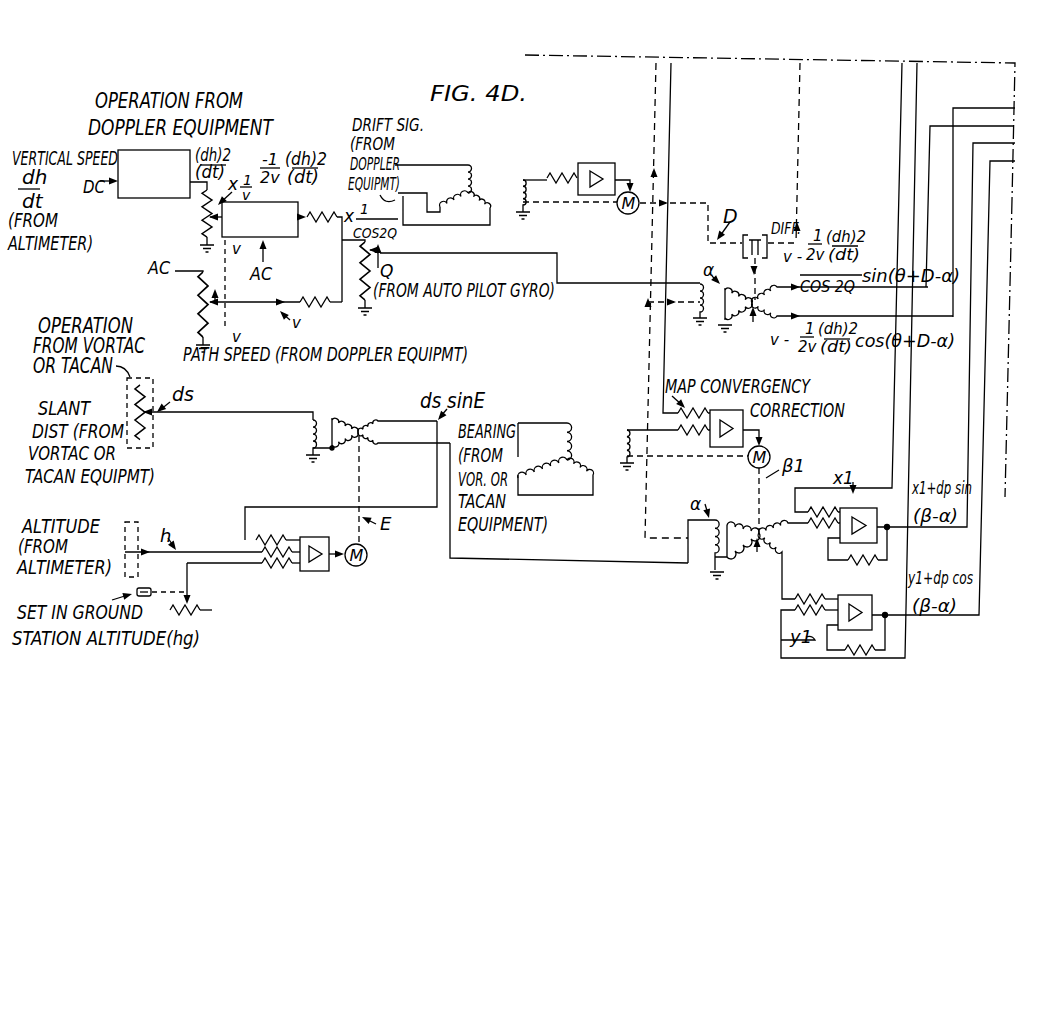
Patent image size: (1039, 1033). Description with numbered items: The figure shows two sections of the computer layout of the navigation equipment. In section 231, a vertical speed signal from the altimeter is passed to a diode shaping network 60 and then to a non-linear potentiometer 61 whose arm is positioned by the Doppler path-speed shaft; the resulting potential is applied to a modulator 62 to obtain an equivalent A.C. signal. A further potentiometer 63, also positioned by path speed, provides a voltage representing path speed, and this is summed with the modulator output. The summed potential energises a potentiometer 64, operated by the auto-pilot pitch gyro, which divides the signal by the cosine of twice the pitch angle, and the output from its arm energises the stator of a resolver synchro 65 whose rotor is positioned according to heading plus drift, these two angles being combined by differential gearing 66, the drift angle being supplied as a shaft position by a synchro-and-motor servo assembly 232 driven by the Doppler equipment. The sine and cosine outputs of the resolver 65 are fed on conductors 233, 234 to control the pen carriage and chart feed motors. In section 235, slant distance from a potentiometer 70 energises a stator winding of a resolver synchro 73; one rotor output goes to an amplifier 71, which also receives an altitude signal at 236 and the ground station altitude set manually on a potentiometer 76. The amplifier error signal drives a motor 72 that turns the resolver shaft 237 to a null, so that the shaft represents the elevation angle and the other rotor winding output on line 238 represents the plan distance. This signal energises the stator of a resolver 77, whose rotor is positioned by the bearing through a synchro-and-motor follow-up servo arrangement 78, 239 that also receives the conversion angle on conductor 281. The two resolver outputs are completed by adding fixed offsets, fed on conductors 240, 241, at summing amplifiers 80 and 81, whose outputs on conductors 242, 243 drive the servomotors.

The diode shaping network 60 is at (154, 185).
The non-linear potentiometer 61 is at (200, 218).
The modulator 62 is at (262, 197).
The further potentiometer 63 is at (200, 301).
The potentiometer 64 is at (362, 247).
The resolver synchro 65 is at (800, 314).
The differential gearing 66 is at (752, 233).
The potentiometer 70 is at (150, 418).
The amplifier 71 is at (318, 572).
The motor 72 is at (368, 555).
The resolver synchro 73 is at (351, 414).
The potentiometer 76 is at (190, 606).
The resolver 77 is at (748, 533).
The synchro-and-motor follow-up servo arrangement 78 is at (568, 466).
The summing amplifier 80 is at (857, 507).
The summing amplifier 81 is at (852, 595).
The section 231 is at (471, 311).
The synchro-and-motor servo assembly 232 is at (540, 167).
The conductor 233 is at (929, 168).
The conductor 234 is at (952, 199).
The section 235 is at (501, 405).
The altitude signal input 236 is at (232, 551).
The resolver shaft 237 is at (359, 469).
The line 238 is at (450, 543).
The synchro-and-motor follow-up servo arrangement 239 is at (705, 441).
The conductor 240 is at (893, 381).
The conductor 241 is at (904, 412).
The conductor 242 is at (967, 382).
The conductor 243 is at (979, 440).
The conductor 281 is at (667, 167).